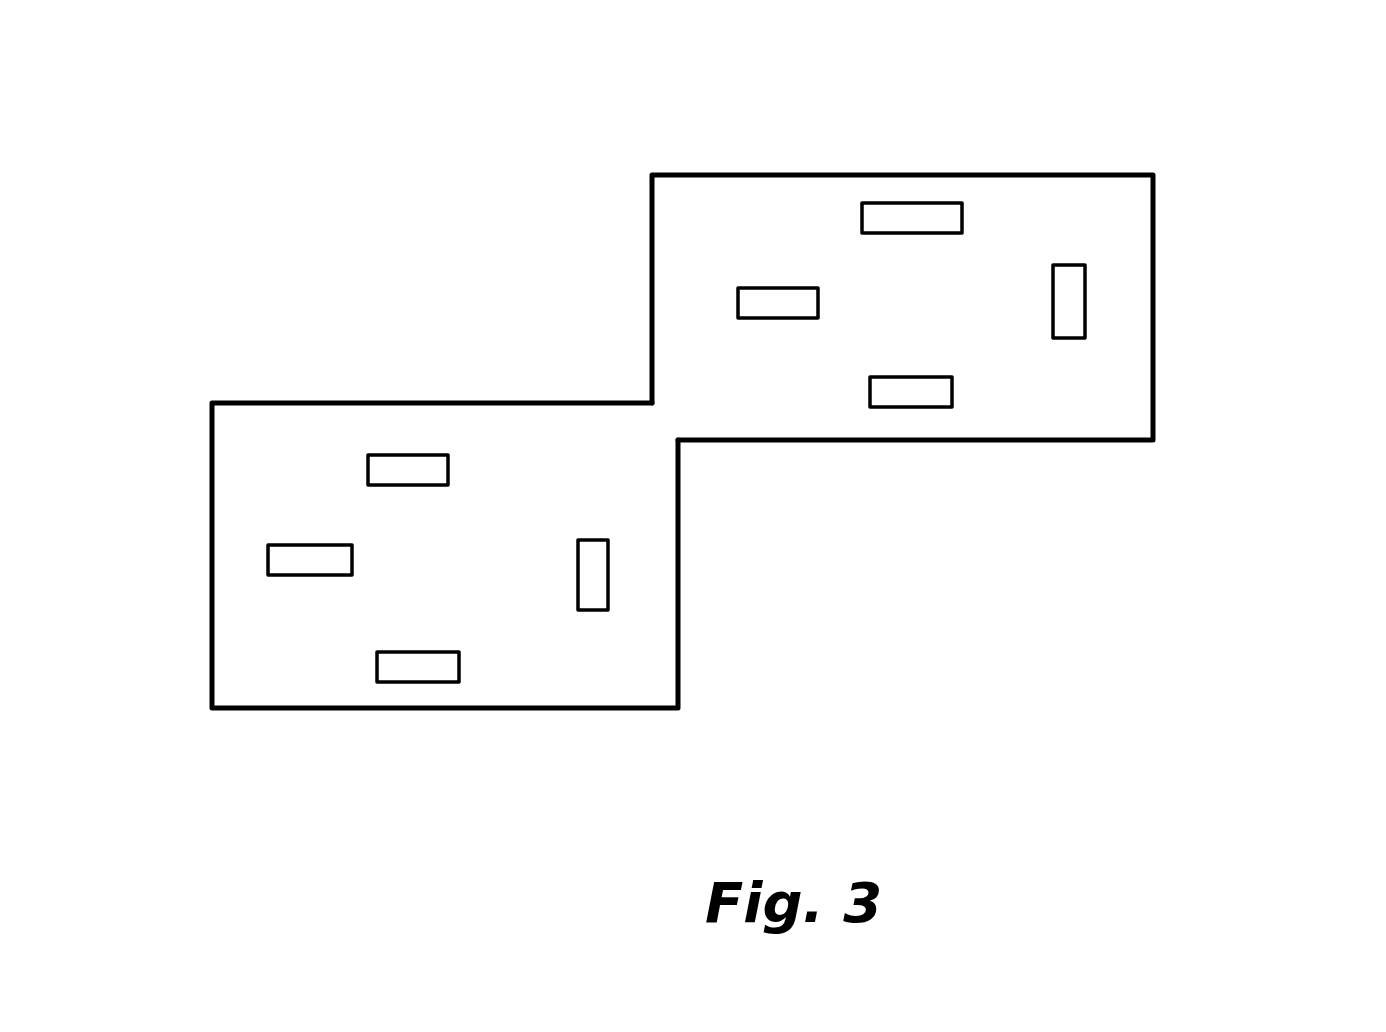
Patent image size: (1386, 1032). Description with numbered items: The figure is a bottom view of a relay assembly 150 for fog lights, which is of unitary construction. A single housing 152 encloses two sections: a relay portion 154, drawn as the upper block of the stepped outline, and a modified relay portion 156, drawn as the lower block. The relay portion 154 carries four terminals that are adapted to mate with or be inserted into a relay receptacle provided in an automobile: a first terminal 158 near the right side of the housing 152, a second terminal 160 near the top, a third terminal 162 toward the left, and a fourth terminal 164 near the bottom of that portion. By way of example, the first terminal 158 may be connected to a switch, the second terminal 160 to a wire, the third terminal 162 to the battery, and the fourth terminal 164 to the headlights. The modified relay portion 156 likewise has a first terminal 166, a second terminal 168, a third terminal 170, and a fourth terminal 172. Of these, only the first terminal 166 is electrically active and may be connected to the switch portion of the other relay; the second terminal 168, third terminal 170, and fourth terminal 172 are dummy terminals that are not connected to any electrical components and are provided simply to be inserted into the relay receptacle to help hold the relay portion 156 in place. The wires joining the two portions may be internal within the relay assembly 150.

The relay assembly 150 is at (793, 364).
The housing 152 is at (793, 364).
The relay portion 154 is at (791, 211).
The modified relay portion 156 is at (284, 438).
The first terminal 158 is at (1085, 312).
The second terminal 160 is at (921, 203).
The third terminal 162 is at (770, 288).
The fourth terminal 164 is at (915, 407).
The first terminal 166 is at (608, 583).
The second terminal 168 is at (423, 455).
The third terminal 170 is at (268, 562).
The fourth terminal 172 is at (418, 683).